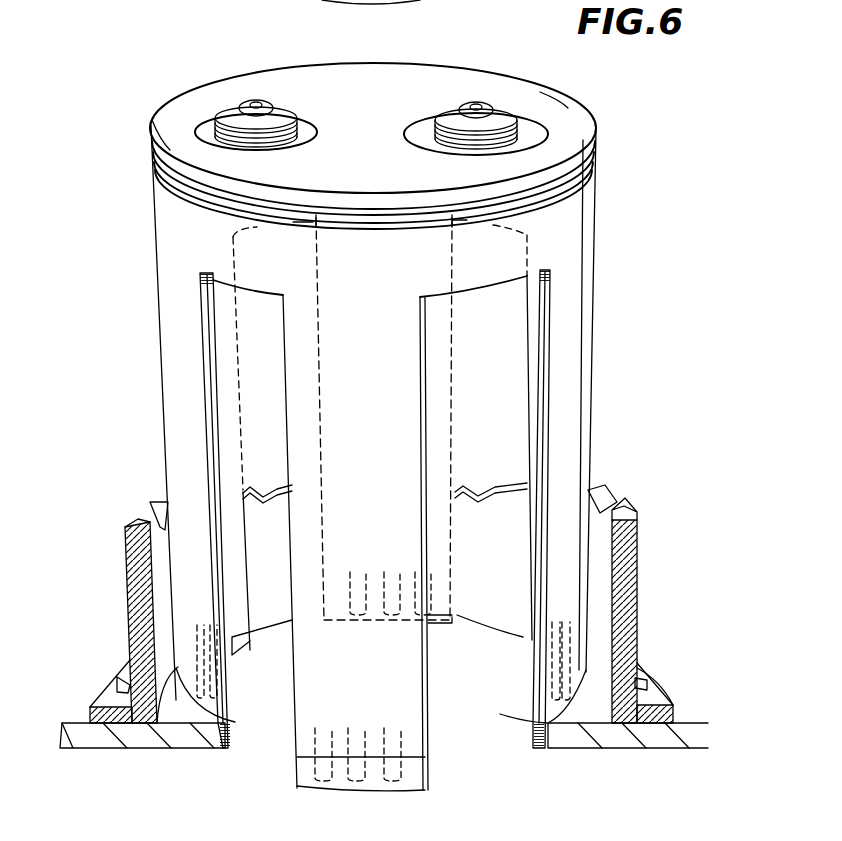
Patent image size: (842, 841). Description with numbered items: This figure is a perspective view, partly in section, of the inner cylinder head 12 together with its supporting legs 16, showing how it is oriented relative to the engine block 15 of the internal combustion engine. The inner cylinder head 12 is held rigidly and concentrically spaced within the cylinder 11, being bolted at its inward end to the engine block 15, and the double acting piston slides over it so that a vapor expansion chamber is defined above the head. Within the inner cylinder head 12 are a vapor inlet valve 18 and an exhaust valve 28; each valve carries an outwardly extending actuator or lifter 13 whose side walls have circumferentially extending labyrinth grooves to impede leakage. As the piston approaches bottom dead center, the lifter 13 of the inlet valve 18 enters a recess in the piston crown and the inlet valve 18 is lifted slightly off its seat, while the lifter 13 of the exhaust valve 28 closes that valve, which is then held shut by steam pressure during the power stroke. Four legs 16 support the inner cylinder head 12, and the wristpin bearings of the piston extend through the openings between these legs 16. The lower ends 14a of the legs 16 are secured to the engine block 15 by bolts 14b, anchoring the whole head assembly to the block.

The cylinder 11 is at (125, 568).
The inner cylinder head 12 is at (176, 226).
The actuator or lifter 13 is at (216, 108).
The lower ends of the legs 14a is at (433, 624).
The bolts 14b is at (200, 643).
The engine block 15 is at (83, 723).
The legs 16 is at (172, 362).
The vapor inlet valve 18 is at (152, 118).
The exhaust valve 28 is at (563, 100).